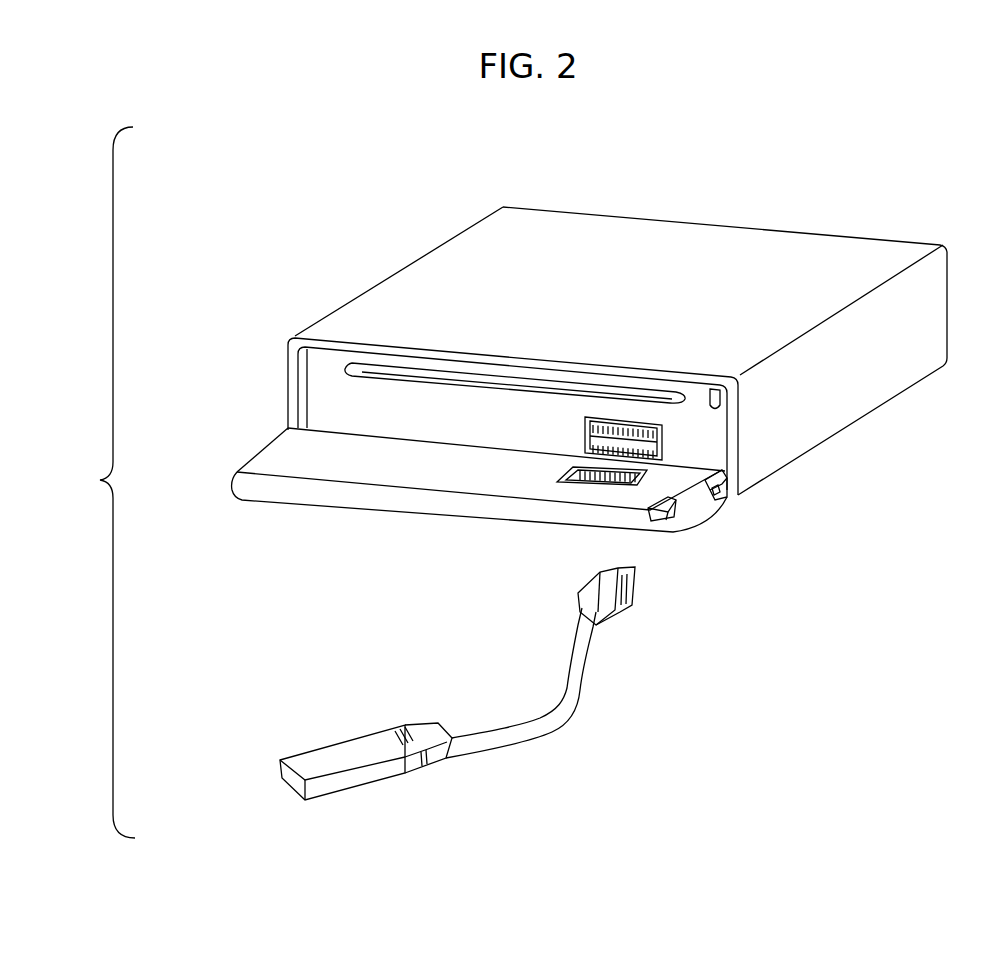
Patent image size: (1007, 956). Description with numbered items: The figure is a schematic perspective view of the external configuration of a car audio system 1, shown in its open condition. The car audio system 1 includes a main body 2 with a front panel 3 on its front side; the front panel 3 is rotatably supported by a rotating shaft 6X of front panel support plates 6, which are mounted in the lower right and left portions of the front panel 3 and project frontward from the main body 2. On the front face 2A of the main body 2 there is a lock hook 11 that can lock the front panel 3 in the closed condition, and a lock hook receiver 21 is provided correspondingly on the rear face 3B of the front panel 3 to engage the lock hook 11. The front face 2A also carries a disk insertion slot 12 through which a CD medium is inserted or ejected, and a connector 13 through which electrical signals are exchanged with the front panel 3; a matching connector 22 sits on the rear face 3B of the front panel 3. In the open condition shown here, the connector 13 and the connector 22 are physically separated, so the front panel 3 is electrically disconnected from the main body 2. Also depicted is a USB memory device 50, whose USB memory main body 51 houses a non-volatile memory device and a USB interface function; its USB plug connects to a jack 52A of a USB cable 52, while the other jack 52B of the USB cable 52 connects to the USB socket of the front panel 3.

The car audio system 1 is at (872, 186).
The main body 2 is at (535, 214).
The front face 2A is at (318, 380).
The front panel 3 is at (283, 463).
The rear face 3B is at (509, 486).
The front panel support plates 6 is at (723, 480).
The rotating shaft 6X is at (717, 495).
The lock hook 11 is at (721, 404).
The disk insertion slot 12 is at (365, 365).
The connector 13 is at (650, 410).
The lock hook receiver 21 is at (654, 522).
The connector 22 is at (553, 490).
The USB memory device 50 is at (270, 755).
The USB memory main body 51 is at (375, 783).
The USB cable 52 is at (553, 732).
The jack 52A is at (405, 730).
The jack 52B is at (628, 600).